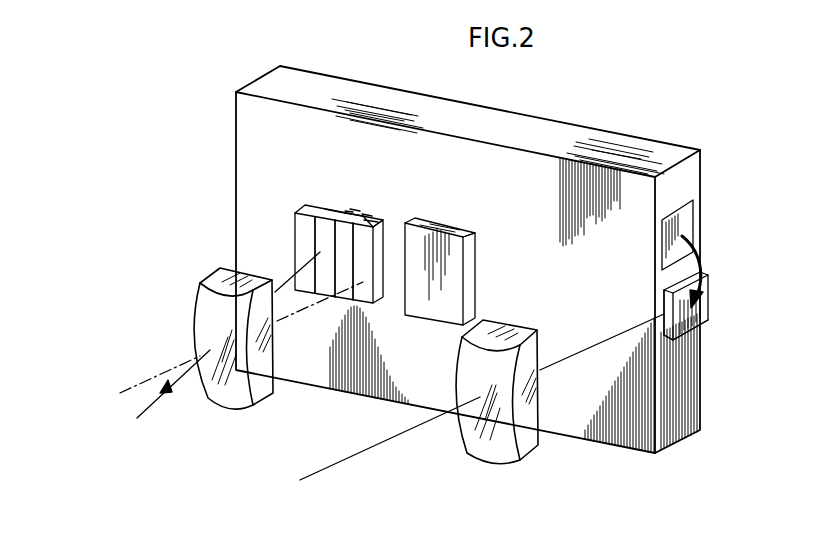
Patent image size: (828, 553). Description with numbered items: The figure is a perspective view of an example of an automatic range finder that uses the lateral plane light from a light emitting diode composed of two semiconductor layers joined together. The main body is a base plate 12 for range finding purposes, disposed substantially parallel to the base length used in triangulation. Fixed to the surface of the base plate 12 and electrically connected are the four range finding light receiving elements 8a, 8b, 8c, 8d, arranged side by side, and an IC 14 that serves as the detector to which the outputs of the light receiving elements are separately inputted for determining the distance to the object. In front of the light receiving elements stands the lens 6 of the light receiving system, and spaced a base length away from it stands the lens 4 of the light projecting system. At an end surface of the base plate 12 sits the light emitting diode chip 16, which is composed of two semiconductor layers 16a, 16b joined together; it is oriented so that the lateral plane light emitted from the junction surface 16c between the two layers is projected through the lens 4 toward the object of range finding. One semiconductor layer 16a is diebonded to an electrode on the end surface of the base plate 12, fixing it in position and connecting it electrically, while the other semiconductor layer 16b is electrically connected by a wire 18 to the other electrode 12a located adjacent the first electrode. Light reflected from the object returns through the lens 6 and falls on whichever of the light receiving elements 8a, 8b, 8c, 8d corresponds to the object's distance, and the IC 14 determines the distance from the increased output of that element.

The base plate 12 is at (575, 133).
The electrode 12a is at (688, 230).
The wire 18 is at (702, 256).
The light emitting diode chip 16 is at (703, 313).
The semiconductor layer 16a is at (664, 298).
The semiconductor layer 16b is at (677, 342).
The junction surface 16c is at (665, 342).
The light receiving element 8a is at (300, 233).
The light receiving element 8b is at (324, 230).
The light receiving element 8c is at (342, 228).
The light receiving element 8d is at (363, 237).
The IC 14 is at (427, 245).
The lens 6 is at (202, 283).
The lens 4 is at (497, 330).